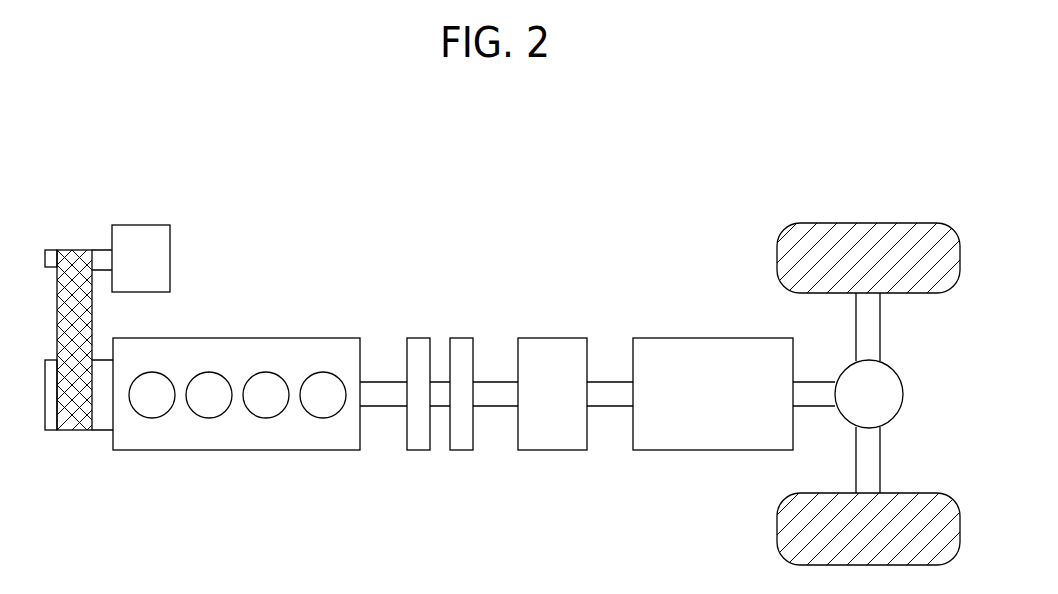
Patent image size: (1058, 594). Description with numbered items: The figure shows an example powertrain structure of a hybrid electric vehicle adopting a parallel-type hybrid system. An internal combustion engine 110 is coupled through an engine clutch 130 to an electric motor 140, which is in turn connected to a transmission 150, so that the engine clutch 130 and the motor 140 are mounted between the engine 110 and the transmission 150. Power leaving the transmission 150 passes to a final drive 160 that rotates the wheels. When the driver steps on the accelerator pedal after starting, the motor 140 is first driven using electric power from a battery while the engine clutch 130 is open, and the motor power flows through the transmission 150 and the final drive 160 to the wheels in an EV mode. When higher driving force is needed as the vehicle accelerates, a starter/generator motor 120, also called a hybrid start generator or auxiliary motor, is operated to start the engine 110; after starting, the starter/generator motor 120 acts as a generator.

The internal combustion engine 110 is at (317, 335).
The starter/generator motor 120 is at (170, 240).
The engine clutch 130 is at (470, 333).
The electric motor 140 is at (560, 335).
The transmission 150 is at (747, 335).
The final drive 160 is at (898, 372).